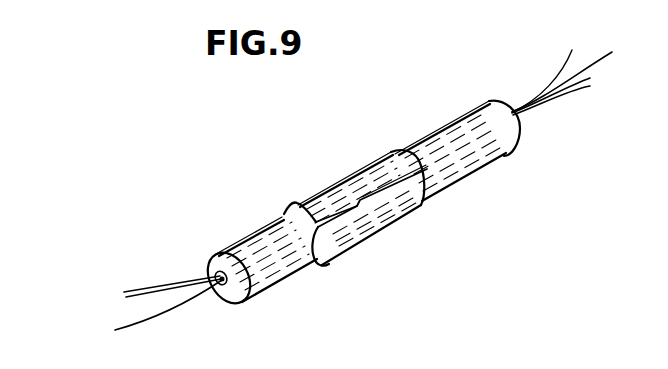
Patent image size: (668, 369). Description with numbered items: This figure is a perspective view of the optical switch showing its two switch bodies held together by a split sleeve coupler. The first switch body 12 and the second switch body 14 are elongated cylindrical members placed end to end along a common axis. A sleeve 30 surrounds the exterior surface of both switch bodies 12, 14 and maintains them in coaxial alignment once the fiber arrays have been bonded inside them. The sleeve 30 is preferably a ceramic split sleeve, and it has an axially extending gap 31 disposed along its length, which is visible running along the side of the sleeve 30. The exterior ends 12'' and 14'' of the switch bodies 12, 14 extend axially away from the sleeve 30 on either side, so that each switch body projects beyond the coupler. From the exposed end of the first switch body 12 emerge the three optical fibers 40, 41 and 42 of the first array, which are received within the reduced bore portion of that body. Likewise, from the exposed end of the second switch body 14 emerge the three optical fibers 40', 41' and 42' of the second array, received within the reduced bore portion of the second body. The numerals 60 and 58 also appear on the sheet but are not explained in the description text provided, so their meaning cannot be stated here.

The first switch body 12 is at (255, 251).
The exterior end of first switch body 12'' is at (281, 315).
The second switch body 14 is at (457, 121).
The exterior end of second switch body 14'' is at (515, 190).
The sleeve 30 is at (328, 161).
The axially extending gap 31 is at (343, 221).
The optical fiber 40 is at (207, 319).
The optical fiber 41 is at (152, 279).
The optical fiber 42 is at (162, 324).
The optical fiber 40' is at (590, 101).
The optical fiber 41' is at (542, 72).
The optical fiber 42' is at (584, 72).
The reference 60 is at (496, 357).
The reference 58 is at (566, 357).